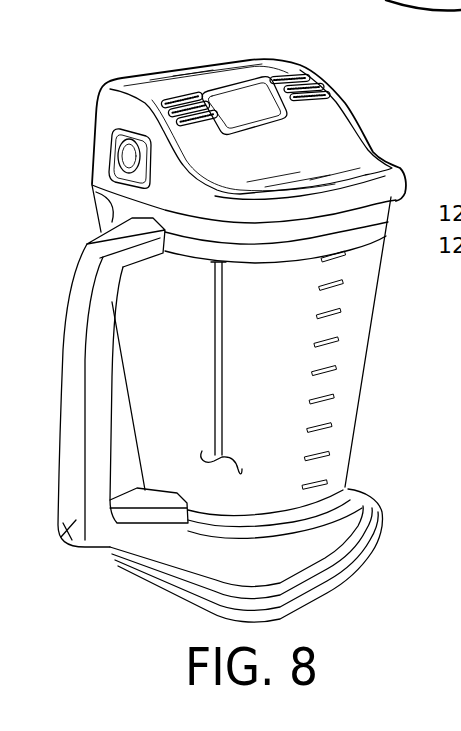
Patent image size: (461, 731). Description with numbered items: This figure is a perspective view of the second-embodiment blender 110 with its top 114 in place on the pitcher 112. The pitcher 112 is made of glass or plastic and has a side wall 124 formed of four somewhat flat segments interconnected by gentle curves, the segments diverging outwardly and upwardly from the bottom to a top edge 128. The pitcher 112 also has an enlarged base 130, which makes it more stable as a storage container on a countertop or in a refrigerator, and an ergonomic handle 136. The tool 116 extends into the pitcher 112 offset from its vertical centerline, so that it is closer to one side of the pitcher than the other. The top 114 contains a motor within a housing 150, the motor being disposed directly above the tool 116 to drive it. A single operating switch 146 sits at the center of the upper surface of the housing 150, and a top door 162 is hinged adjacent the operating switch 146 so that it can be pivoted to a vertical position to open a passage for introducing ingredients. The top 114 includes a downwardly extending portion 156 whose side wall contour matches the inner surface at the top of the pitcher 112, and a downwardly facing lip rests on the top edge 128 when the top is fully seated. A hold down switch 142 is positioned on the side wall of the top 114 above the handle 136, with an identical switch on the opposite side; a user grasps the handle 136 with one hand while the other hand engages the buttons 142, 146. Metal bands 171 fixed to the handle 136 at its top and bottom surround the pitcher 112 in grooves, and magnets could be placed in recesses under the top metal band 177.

The blender 110 is at (390, 363).
The pitcher 112 is at (348, 410).
The top 114 is at (104, 90).
The tool 116 is at (214, 332).
The side wall 124 is at (380, 278).
The top edge 128 is at (100, 207).
The enlarged base 130 is at (360, 506).
The handle 136 is at (63, 540).
The hold down switch 142 is at (100, 142).
The operating switch 146 is at (245, 98).
The housing 150 is at (172, 72).
The downwardly extending portion 156 is at (406, 194).
The top door 162 is at (342, 130).
The metal bands 171 is at (259, 253).
The top metal band 177 is at (320, 503).